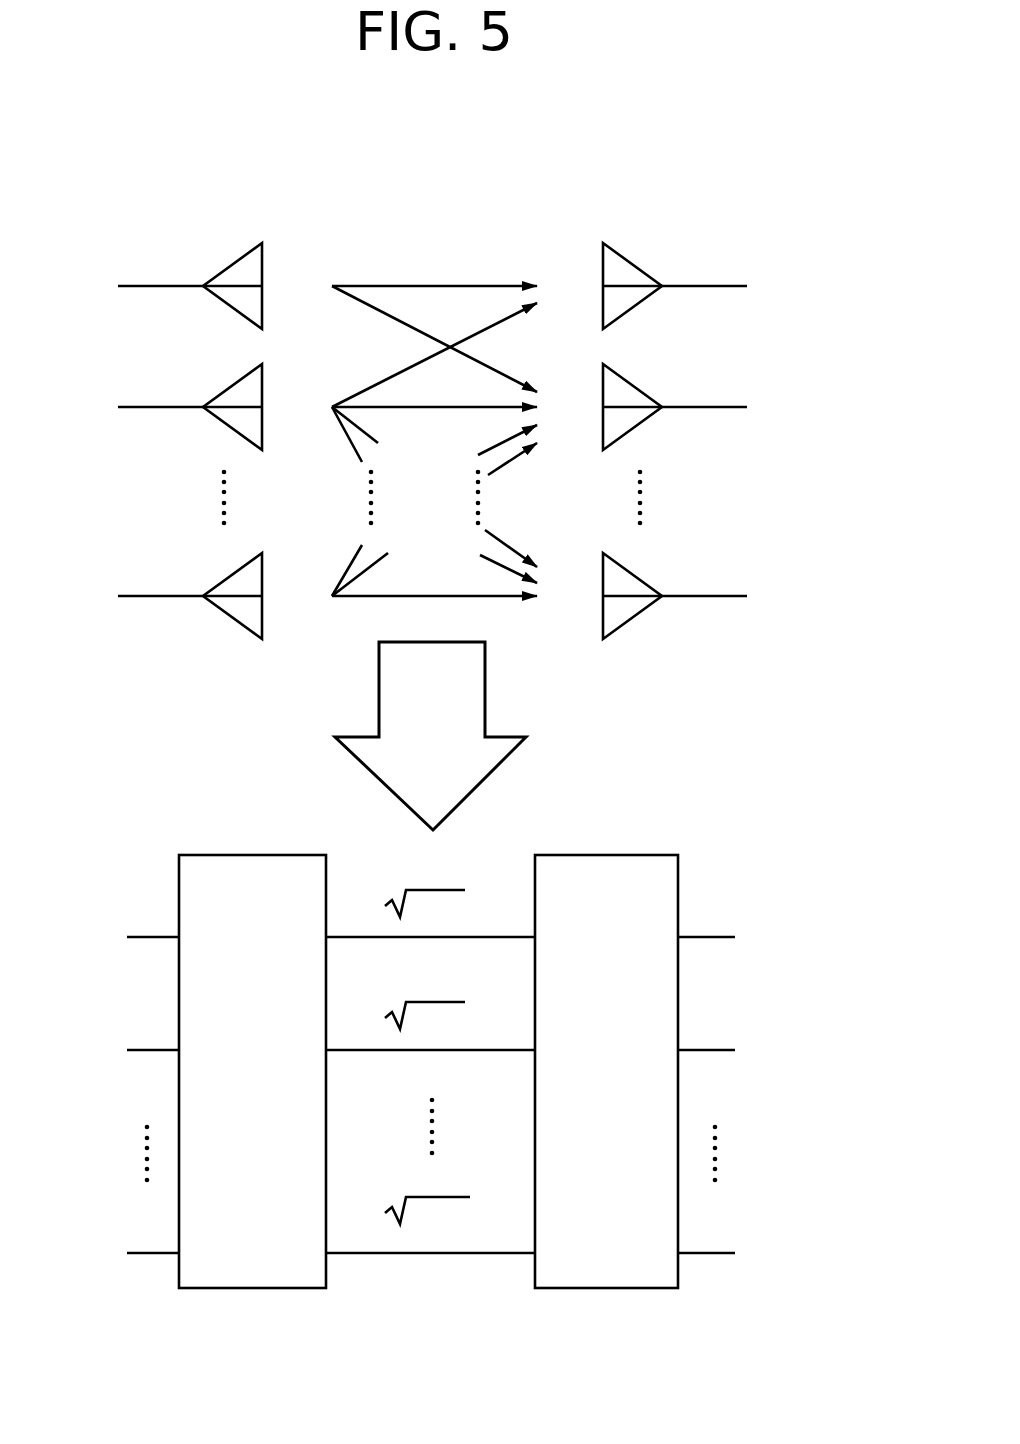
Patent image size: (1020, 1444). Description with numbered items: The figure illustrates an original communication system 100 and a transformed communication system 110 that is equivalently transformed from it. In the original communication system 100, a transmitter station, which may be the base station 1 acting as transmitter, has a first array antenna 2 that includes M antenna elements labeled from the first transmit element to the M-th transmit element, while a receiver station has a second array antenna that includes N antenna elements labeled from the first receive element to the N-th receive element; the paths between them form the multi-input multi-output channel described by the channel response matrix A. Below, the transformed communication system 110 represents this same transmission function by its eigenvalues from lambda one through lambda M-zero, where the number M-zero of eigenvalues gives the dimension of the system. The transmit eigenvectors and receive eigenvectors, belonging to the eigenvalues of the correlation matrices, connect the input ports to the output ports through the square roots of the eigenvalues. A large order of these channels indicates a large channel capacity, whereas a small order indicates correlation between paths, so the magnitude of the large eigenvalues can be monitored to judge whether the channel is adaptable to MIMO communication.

The original communication system 100 is at (706, 210).
The transformed communication system 110 is at (704, 826).
The base station 1 is at (429, 937).
The first array antenna 2 is at (429, 1050).